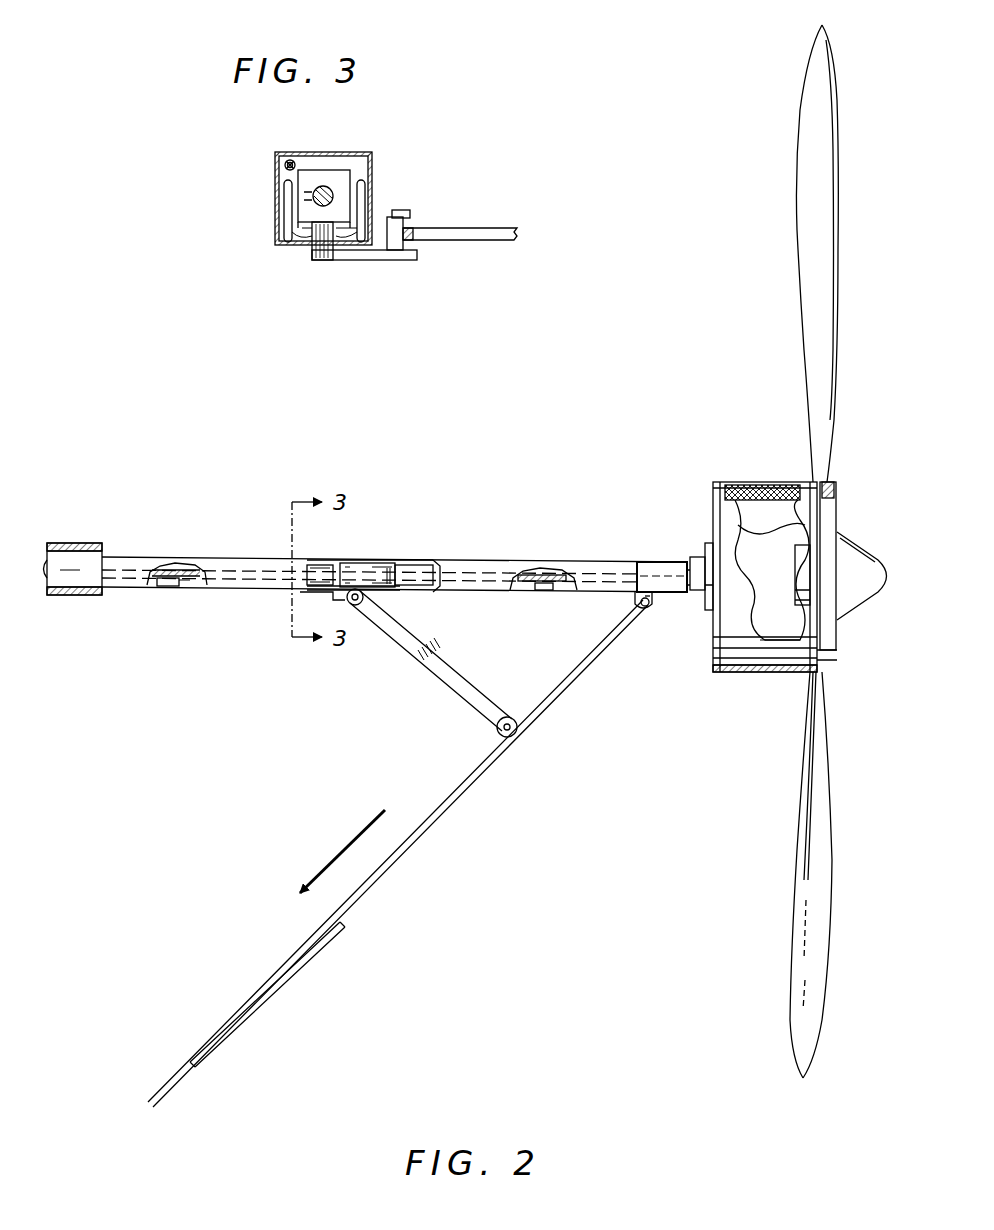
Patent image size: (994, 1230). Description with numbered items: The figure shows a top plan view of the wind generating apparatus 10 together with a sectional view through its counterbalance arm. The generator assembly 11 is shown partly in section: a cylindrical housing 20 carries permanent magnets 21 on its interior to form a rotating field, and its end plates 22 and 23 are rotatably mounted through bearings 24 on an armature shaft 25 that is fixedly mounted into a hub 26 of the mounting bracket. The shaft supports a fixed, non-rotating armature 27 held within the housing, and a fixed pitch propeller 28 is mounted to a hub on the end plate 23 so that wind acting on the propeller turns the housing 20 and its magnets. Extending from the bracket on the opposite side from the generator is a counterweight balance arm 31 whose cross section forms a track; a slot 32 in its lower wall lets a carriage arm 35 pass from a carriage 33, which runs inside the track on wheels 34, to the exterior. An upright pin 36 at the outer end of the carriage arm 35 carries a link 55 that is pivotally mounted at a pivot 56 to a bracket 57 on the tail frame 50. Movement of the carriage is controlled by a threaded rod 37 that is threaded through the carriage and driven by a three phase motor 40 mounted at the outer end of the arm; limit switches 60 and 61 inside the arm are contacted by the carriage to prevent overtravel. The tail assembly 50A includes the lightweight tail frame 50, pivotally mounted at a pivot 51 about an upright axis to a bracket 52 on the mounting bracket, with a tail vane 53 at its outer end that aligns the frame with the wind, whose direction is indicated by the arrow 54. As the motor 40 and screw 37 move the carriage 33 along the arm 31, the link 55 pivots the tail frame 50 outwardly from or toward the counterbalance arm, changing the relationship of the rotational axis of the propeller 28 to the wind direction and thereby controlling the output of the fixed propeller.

In FIG. 2, the generating apparatus 10 is at (595, 688).
In FIG. 2, the generator assembly 11 is at (735, 478).
In FIG. 2, the cylindrical housing 20 is at (770, 485).
In FIG. 2, the permanent magnets 21 is at (725, 490).
In FIG. 2, the end plate 22 is at (713, 665).
In FIG. 2, the end plate 23 is at (830, 500).
In FIG. 2, the bearings 24 is at (697, 560).
In FIG. 2, the armature shaft 25 is at (697, 590).
In FIG. 2, the hub 26 is at (655, 562).
In FIG. 2, the armature 27 is at (767, 520).
In FIG. 2, the propeller 28 is at (790, 838).
In FIG. 3, the counterweight balance arm 31 is at (280, 158).
In FIG. 3, the slot 32 is at (312, 250).
In FIG. 3, the carriage 33 is at (320, 172).
In FIG. 2, the carriage 33 is at (420, 563).
In FIG. 3, the wheels 34 is at (287, 203).
In FIG. 2, the wheels 34 is at (398, 563).
In FIG. 3, the carriage arm 35 is at (361, 261).
In FIG. 2, the carriage arm 35 is at (320, 596).
In FIG. 3, the upright pin 36 is at (400, 216).
In FIG. 2, the upright pin 36 is at (365, 600).
In FIG. 3, the threaded rod 37 is at (304, 196).
In FIG. 2, the threaded rod 37 is at (180, 565).
In FIG. 2, the three phase motor 40 is at (75, 543).
In FIG. 2, the tail frame 50 is at (445, 800).
In FIG. 2, the tail assembly 50A is at (385, 948).
In FIG. 2, the pivot 51 is at (640, 605).
In FIG. 2, the bracket 52 is at (652, 610).
In FIG. 2, the tail vane 53 is at (243, 1018).
In FIG. 2, the arrow 54 is at (350, 840).
In FIG. 3, the link 55 is at (490, 242).
In FIG. 2, the pivot 56 is at (510, 718).
In FIG. 2, the bracket 57 is at (497, 730).
In FIG. 2, the limit switch 60 is at (546, 591).
In FIG. 2, the limit switch 61 is at (162, 583).